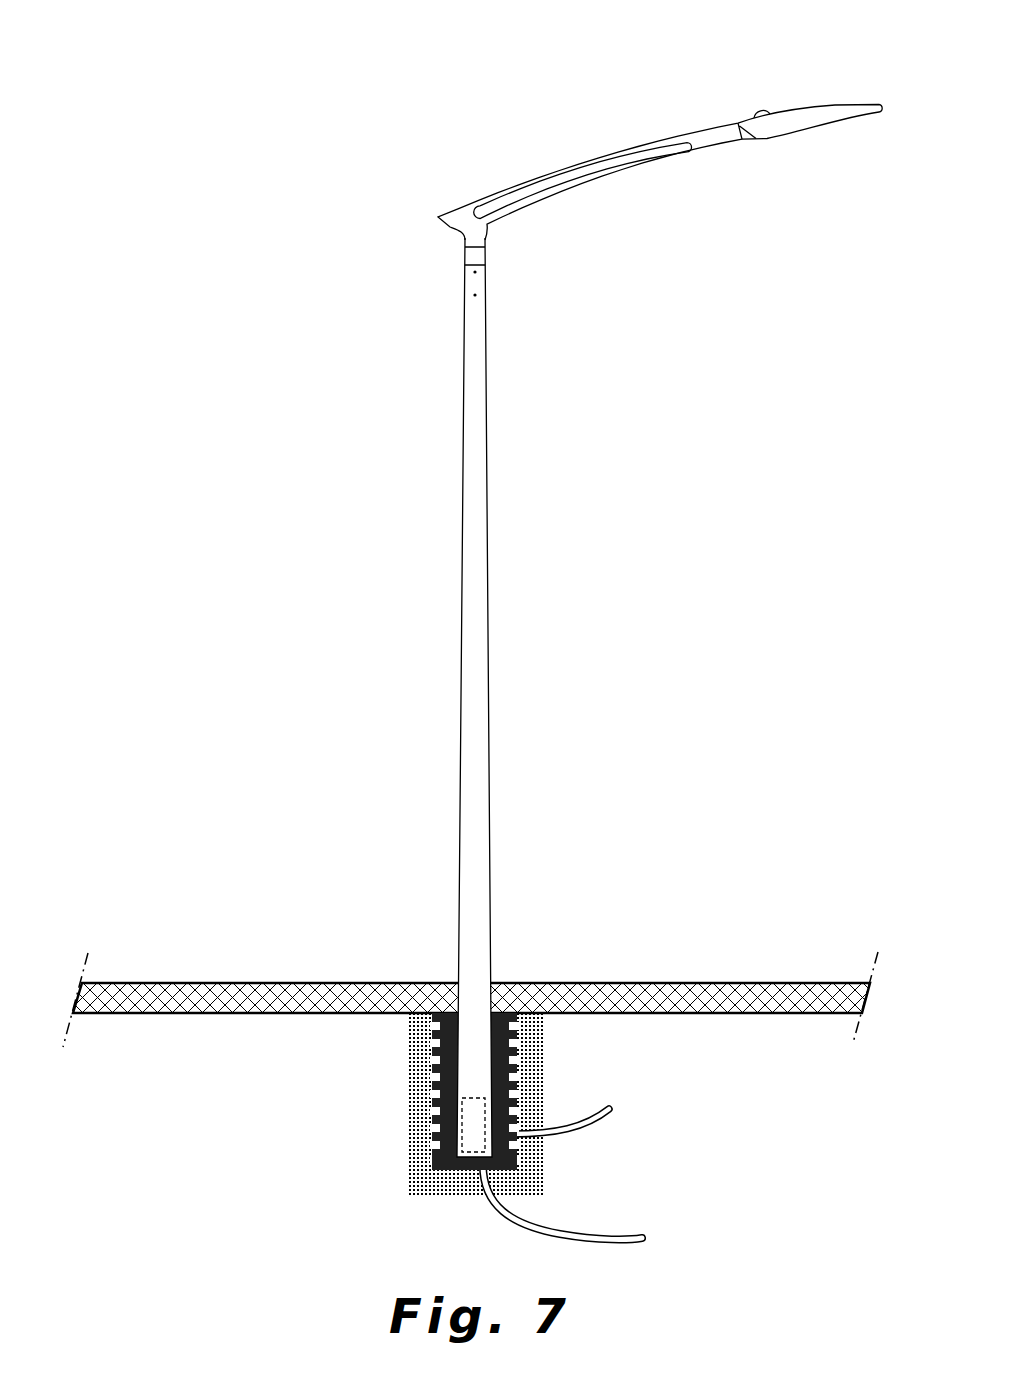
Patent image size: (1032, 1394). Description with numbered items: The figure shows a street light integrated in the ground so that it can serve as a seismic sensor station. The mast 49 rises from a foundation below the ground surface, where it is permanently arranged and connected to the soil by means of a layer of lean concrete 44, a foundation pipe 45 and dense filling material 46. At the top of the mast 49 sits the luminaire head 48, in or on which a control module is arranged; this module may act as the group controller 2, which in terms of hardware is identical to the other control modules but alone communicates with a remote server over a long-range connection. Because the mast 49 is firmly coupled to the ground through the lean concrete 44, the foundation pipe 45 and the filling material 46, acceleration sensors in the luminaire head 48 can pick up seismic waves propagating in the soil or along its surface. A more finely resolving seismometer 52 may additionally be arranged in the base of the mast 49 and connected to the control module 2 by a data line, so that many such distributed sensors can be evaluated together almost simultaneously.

The group controller 2 is at (757, 105).
The luminaire head 48 is at (792, 157).
The mast 49 is at (475, 513).
The layer of lean concrete 44 is at (533, 1067).
The foundation pipe 45 is at (432, 1083).
The dense filling material 46 is at (435, 1158).
The sensor unit in base 52 is at (478, 1125).